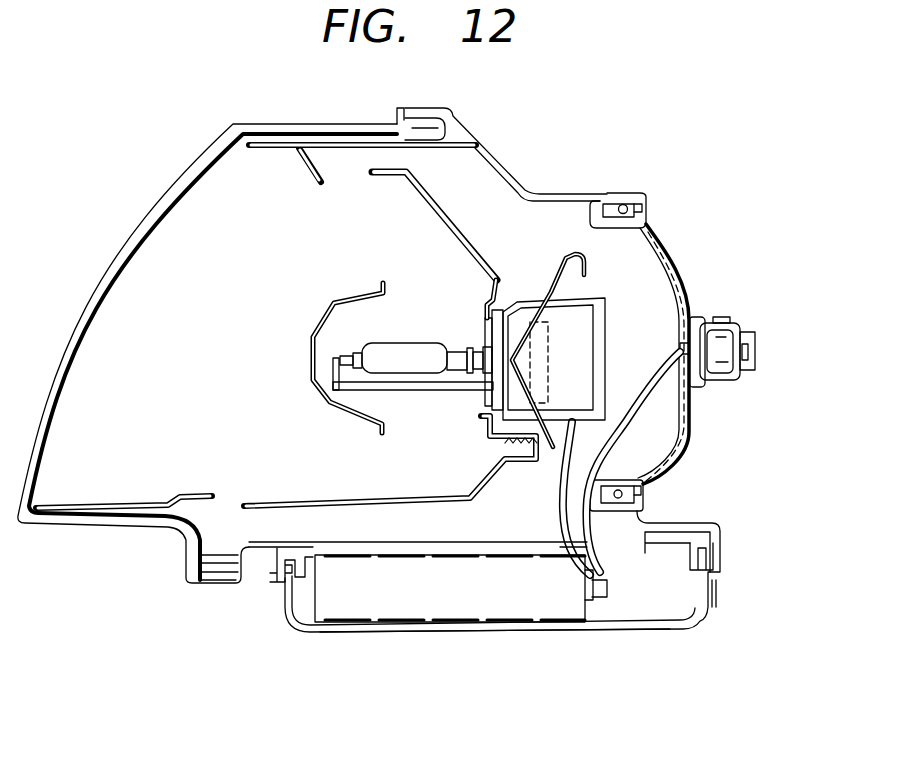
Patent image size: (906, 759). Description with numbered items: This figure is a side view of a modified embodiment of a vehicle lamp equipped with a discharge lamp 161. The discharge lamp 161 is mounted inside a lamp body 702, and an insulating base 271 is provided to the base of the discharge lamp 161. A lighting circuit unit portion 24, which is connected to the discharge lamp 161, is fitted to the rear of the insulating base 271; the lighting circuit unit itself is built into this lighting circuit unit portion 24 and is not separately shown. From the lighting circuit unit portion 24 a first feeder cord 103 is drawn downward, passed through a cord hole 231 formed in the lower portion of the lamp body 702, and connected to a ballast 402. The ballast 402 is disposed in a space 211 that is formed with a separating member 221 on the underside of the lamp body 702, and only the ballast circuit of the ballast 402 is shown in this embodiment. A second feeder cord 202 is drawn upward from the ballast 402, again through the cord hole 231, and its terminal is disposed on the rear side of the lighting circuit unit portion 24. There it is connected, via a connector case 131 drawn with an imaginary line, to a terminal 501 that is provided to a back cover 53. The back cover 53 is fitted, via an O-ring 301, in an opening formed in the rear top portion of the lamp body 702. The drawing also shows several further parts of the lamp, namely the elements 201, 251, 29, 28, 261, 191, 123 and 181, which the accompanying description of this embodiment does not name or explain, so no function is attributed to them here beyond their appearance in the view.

The lens 201 is at (115, 253).
The lens rib 251 is at (258, 150).
The lamp body 702 is at (503, 167).
The O-ring 301 is at (626, 205).
The housing rear wall 29 is at (672, 290).
The lighting circuit unit portion 24 is at (570, 317).
The connector case 131 is at (682, 345).
The back cover 53 is at (689, 305).
The terminal 501 is at (720, 362).
The second feeder cord 202 is at (632, 420).
The first feeder cord 103 is at (557, 486).
The socket flange 28 is at (571, 262).
The insulating base 271 is at (500, 312).
The discharge lamp 161 is at (413, 348).
The bulb support plate 261 is at (356, 392).
The shade bracket 191 is at (327, 313).
The lamp chamber 123 is at (242, 372).
The reflector 181 is at (445, 195).
The space 211 is at (683, 607).
The separating member 221 is at (588, 632).
The cord hole 231 is at (637, 553).
The ballast 402 is at (415, 607).